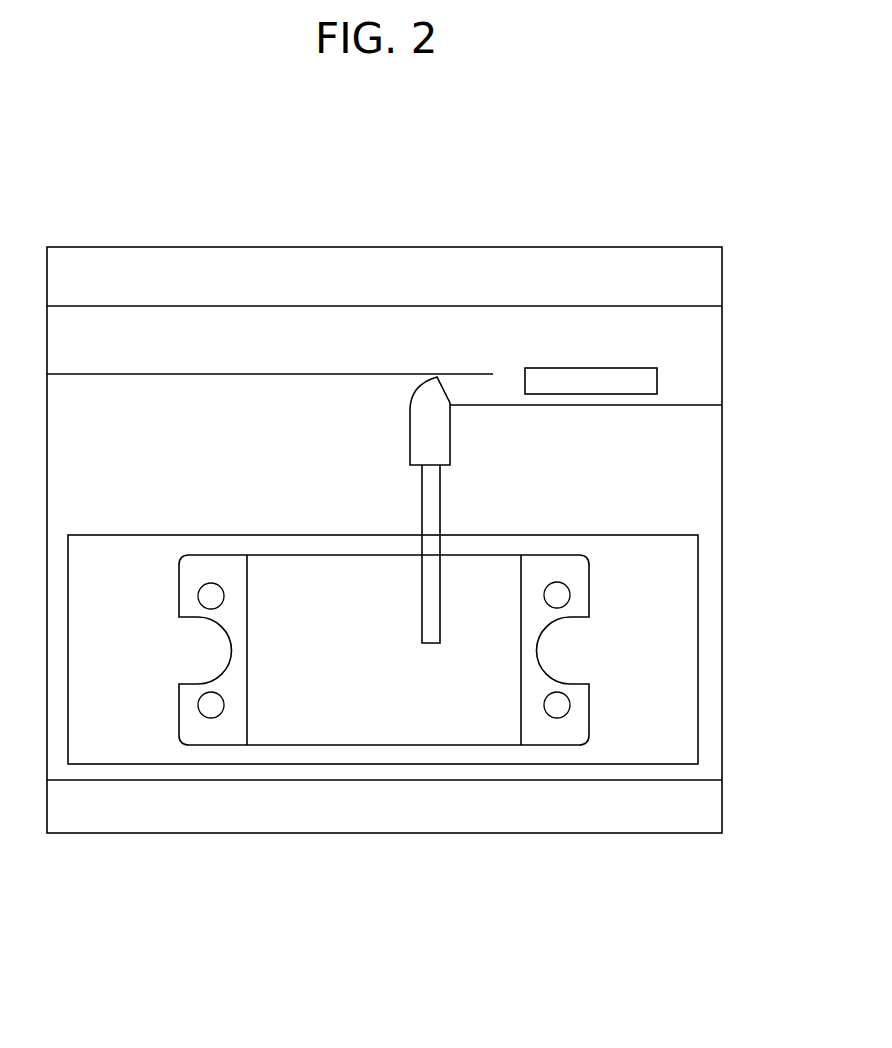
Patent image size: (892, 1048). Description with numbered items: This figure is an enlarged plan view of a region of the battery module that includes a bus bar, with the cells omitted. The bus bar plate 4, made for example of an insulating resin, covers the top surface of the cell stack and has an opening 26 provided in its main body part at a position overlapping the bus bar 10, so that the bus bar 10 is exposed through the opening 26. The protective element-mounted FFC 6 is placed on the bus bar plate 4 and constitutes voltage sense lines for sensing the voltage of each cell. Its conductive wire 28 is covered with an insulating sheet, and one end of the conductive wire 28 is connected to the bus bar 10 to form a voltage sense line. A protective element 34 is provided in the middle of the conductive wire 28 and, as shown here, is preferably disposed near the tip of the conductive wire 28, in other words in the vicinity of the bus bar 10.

The protective element-mounted FFC 6 is at (722, 348).
The bus bar plate 4 is at (670, 780).
The protective element 34 is at (657, 379).
The conductive wire 28 is at (421, 615).
The opening 26 is at (68, 713).
The bus bar 10 is at (265, 745).